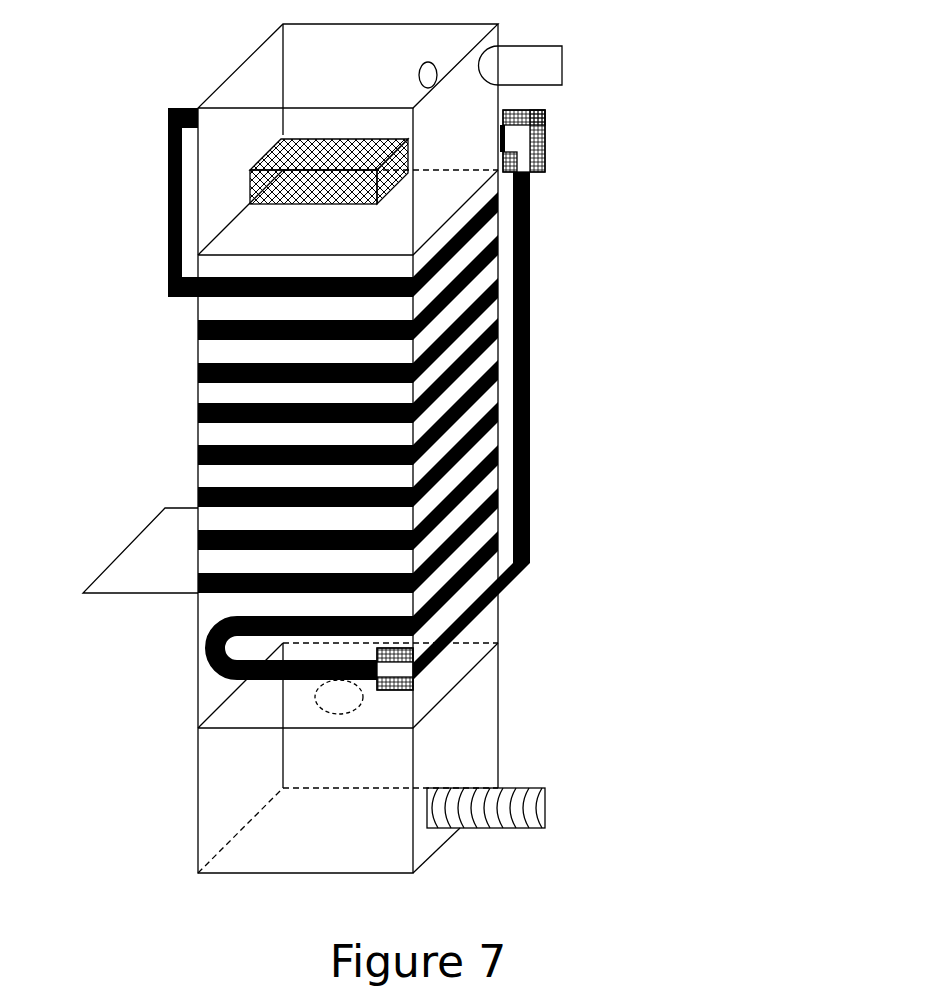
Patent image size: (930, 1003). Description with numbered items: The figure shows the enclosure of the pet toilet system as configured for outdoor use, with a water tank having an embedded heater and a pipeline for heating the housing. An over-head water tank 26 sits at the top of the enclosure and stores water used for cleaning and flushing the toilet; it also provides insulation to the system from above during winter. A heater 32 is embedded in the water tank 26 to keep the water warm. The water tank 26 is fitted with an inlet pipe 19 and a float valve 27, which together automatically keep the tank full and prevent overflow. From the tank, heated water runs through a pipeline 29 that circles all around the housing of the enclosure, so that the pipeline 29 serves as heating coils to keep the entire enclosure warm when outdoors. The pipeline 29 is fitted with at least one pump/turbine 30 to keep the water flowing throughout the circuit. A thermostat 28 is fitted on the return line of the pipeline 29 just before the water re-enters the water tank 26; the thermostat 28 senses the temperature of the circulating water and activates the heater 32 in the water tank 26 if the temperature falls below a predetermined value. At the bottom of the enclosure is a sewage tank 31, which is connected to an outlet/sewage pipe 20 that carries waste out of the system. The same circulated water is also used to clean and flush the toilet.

The inlet pipe 19 is at (562, 67).
The outlet/sewage pipe 20 is at (553, 806).
The water tank 26 is at (348, 139).
The float valve 27 is at (445, 70).
The thermostat 28 is at (552, 143).
The water pipeline 29 is at (185, 344).
The pump/turbine 30 is at (400, 690).
The sewage tank 31 is at (348, 723).
The heater 32 is at (254, 165).